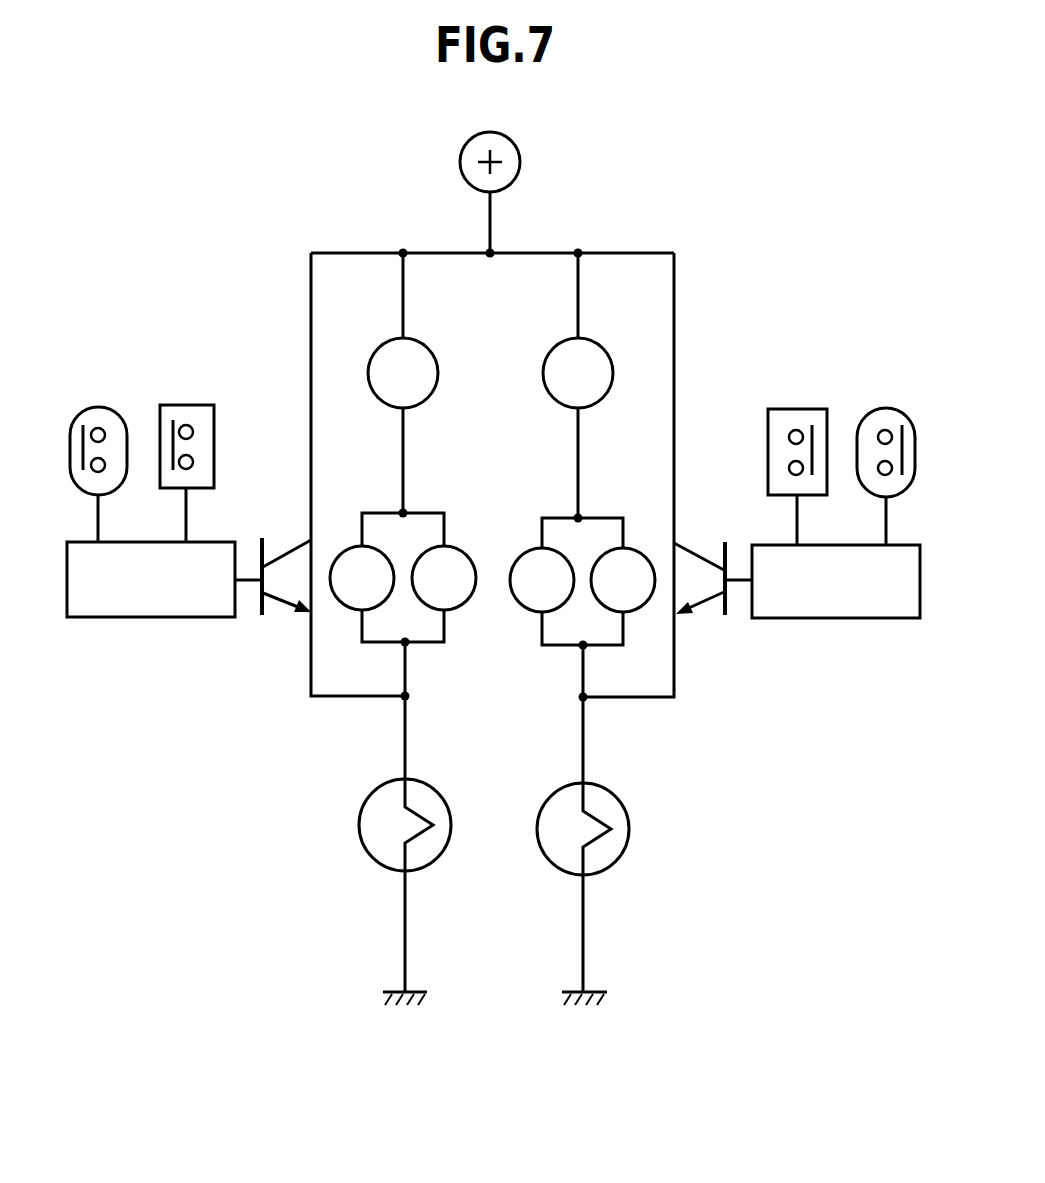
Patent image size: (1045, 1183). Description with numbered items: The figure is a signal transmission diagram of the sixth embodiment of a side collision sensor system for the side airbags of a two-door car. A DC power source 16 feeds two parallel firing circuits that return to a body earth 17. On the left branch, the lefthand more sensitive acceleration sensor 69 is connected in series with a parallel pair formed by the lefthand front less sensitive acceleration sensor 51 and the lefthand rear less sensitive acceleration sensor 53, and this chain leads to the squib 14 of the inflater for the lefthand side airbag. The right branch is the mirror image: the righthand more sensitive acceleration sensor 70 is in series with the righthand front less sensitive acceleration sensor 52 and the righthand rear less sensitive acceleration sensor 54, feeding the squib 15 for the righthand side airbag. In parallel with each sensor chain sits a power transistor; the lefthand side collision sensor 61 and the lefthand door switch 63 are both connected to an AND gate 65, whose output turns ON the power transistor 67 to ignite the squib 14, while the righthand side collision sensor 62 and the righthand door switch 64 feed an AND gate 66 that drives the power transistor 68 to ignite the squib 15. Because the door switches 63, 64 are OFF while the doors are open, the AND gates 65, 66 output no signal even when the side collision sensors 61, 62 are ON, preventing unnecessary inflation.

The squib 14 is at (427, 793).
The squib 15 is at (612, 801).
The DC power source 16 is at (521, 163).
The body earth 17 is at (416, 991).
The lefthand front less sensitive acceleration sensor 51 is at (350, 550).
The righthand front less sensitive acceleration sensor 52 is at (630, 552).
The lefthand rear less sensitive acceleration sensor 53 is at (455, 548).
The righthand rear less sensitive acceleration sensor 54 is at (530, 554).
The lefthand side collision sensor 61 is at (184, 412).
The righthand side collision sensor 62 is at (795, 412).
The lefthand door switch 63 is at (97, 412).
The righthand door switch 64 is at (880, 413).
The AND gate 65 is at (143, 617).
The AND gate 66 is at (828, 618).
The power transistor 67 is at (279, 532).
The power transistor 68 is at (700, 530).
The lefthand more sensitive acceleration sensor 69 is at (424, 353).
The righthand more sensitive acceleration sensor 70 is at (605, 325).